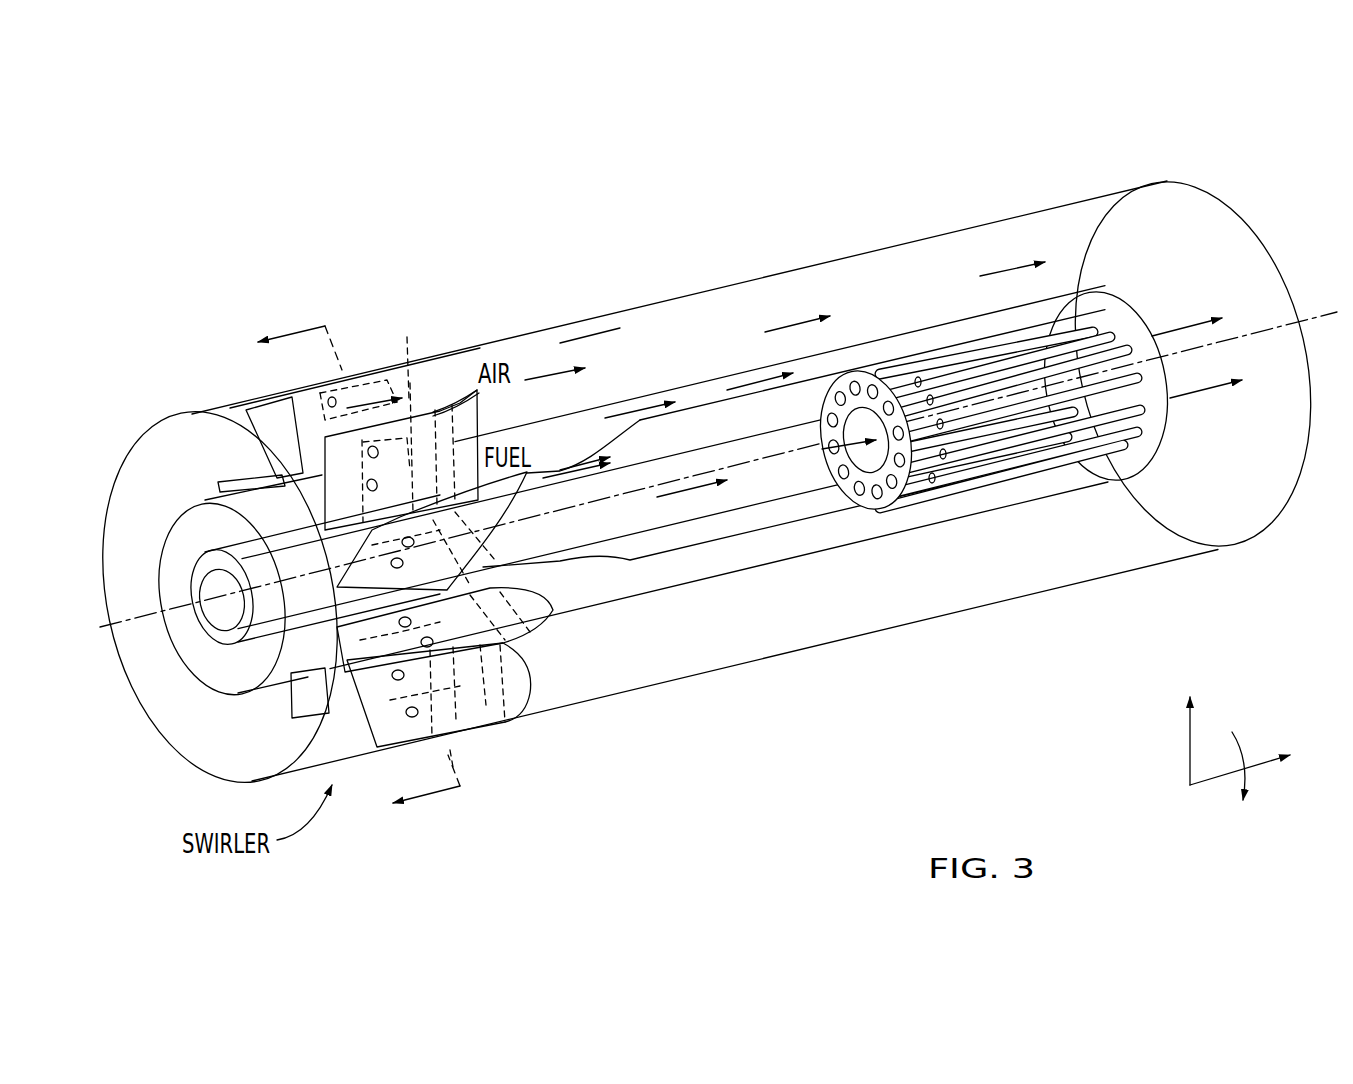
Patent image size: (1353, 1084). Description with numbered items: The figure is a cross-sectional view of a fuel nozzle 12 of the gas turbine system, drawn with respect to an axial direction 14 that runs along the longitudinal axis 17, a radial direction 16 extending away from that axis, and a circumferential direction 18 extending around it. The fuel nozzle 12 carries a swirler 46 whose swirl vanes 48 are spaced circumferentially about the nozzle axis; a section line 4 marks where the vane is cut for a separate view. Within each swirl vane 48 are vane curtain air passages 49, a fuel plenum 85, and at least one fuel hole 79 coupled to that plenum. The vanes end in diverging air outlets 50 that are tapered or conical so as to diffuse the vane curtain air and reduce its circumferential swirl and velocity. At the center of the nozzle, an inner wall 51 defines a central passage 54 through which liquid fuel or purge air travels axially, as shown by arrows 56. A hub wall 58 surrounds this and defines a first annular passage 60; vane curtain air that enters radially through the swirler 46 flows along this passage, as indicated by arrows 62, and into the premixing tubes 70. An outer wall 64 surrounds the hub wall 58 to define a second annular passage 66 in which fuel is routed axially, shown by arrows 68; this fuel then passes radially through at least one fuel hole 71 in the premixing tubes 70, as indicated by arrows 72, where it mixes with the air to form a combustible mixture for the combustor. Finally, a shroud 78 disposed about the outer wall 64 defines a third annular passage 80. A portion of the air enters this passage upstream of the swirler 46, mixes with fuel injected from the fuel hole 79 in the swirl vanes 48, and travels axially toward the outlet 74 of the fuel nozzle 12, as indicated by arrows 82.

The section line 4- 4 is at (358, 573).
The fuel nozzle 12 is at (958, 178).
The axial direction 14 is at (1262, 753).
The radial direction 16 is at (1188, 742).
The longitudinal axis 17 is at (102, 628).
The circumferential direction 18 is at (1232, 732).
The swirler 46 is at (323, 312).
The swirl vanes 48 is at (295, 405).
The vane curtain air passages 49 is at (449, 410).
The diverging air outlets 50 is at (477, 560).
The inner wall 51 is at (512, 565).
The central passage 54 is at (634, 528).
The arrows 56 is at (687, 492).
The hub wall 58 is at (633, 561).
The first annular passage 60 is at (714, 440).
The arrows 62 is at (567, 472).
The outer wall 64 is at (932, 323).
The second annular passage 66 is at (594, 445).
The arrows 68 is at (633, 413).
The premixing tubes 70 is at (983, 344).
The fuel hole 71 is at (917, 379).
The arrows 72 is at (872, 370).
The outlet 74 is at (1302, 240).
The shroud 78 is at (662, 298).
The fuel hole 79 is at (365, 484).
The third annular passage 80 is at (681, 349).
The arrows 82 is at (370, 404).
The fuel plenum 85 is at (423, 549).